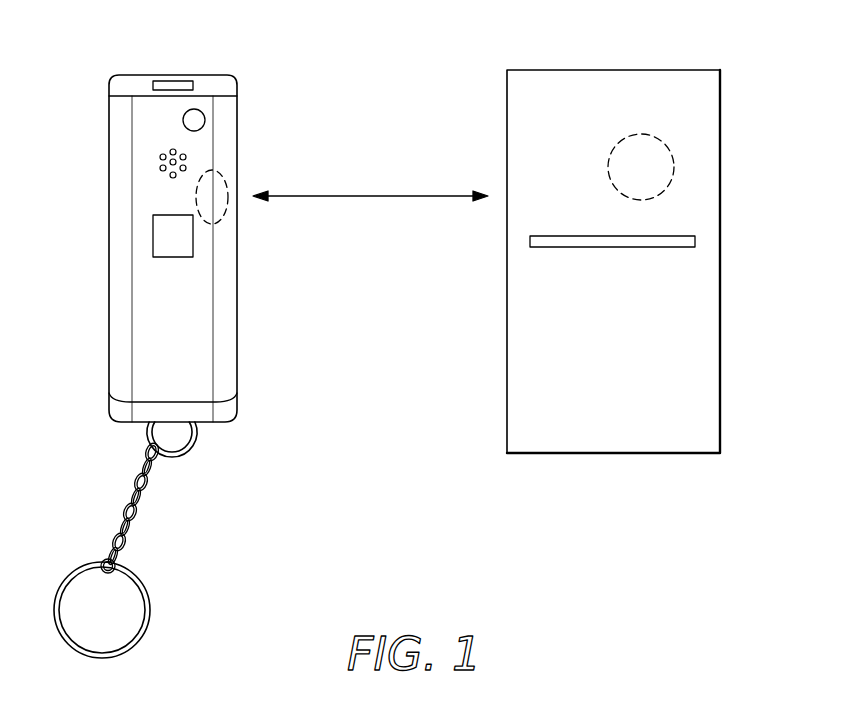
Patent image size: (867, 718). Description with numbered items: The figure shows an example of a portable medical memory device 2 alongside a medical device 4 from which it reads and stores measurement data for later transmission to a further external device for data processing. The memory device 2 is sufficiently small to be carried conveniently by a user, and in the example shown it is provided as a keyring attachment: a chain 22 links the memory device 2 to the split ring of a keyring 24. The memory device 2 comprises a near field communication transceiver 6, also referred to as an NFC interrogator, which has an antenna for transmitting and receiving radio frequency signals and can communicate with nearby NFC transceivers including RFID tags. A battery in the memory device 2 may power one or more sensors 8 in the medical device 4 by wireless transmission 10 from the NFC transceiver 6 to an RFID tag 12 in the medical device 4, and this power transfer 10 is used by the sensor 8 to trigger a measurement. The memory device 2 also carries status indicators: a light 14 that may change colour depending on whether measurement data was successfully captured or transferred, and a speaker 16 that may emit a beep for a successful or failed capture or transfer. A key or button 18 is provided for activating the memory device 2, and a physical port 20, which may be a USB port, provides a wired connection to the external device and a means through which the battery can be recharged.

The portable medical memory device 2 is at (133, 75).
The medical device 4 is at (698, 70).
The near field communication (NFC) transceiver 6 is at (226, 212).
The sensor 8 is at (695, 241).
The wireless transmission 10 is at (373, 196).
The RFID tag 12 is at (672, 147).
The light 14 is at (205, 119).
The speaker 16 is at (160, 158).
The key or button 18 is at (153, 225).
The physical port 20 is at (170, 80).
The chain 22 is at (123, 479).
The keyring 24 is at (148, 590).